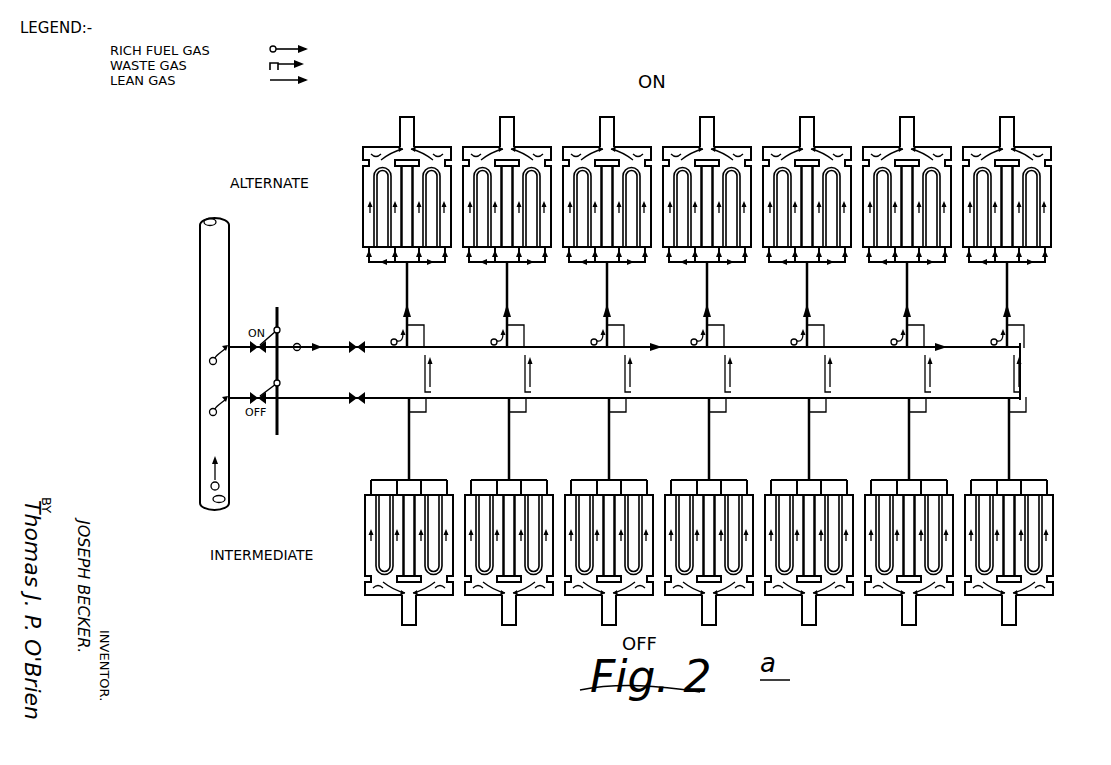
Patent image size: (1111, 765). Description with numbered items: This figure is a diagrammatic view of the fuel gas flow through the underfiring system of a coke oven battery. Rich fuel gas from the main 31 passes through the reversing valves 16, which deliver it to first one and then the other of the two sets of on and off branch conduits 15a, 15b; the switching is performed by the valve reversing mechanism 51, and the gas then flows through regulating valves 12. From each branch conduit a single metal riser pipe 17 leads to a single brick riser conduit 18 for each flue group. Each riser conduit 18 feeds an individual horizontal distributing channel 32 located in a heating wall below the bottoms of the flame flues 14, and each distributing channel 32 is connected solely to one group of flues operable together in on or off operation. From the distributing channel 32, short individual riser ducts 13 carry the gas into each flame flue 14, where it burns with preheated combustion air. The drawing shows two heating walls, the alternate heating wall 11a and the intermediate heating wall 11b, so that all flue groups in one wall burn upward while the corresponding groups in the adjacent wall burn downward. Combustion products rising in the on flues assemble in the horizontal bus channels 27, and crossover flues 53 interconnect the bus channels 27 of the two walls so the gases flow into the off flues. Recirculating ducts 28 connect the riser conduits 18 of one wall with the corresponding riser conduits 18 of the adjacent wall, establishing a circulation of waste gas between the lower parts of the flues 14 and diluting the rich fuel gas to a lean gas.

The heating wall 11a is at (362, 213).
The heating wall 11b is at (365, 571).
The regulating valve 12 is at (357, 392).
The riser duct 13 is at (666, 263).
The flame flue 14 is at (674, 180).
The branch conduit 15a is at (337, 399).
The branch conduit 15b is at (321, 345).
The reversing valve 16 is at (263, 392).
The metal riser pipe 17 is at (400, 332).
The riser conduit 18 is at (410, 290).
The bus channel 27 is at (748, 150).
The recirculating duct 28 is at (526, 334).
The main 31 is at (199, 455).
The distributing channel 32 is at (827, 263).
The valve reversing mechanism 51 is at (278, 433).
The crossover flue 53 is at (506, 122).